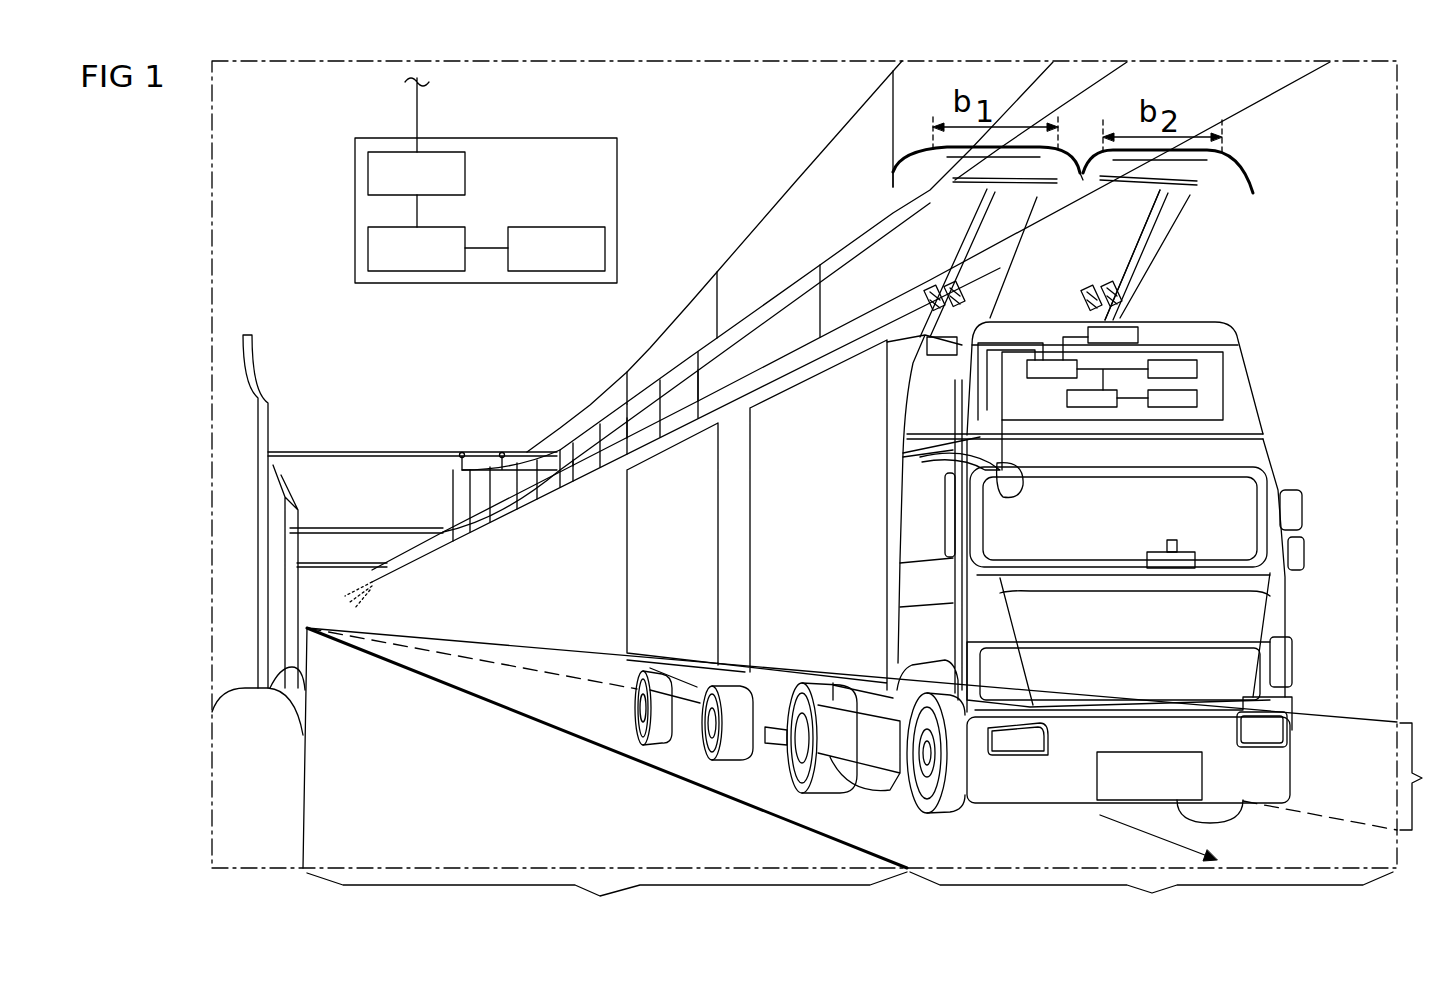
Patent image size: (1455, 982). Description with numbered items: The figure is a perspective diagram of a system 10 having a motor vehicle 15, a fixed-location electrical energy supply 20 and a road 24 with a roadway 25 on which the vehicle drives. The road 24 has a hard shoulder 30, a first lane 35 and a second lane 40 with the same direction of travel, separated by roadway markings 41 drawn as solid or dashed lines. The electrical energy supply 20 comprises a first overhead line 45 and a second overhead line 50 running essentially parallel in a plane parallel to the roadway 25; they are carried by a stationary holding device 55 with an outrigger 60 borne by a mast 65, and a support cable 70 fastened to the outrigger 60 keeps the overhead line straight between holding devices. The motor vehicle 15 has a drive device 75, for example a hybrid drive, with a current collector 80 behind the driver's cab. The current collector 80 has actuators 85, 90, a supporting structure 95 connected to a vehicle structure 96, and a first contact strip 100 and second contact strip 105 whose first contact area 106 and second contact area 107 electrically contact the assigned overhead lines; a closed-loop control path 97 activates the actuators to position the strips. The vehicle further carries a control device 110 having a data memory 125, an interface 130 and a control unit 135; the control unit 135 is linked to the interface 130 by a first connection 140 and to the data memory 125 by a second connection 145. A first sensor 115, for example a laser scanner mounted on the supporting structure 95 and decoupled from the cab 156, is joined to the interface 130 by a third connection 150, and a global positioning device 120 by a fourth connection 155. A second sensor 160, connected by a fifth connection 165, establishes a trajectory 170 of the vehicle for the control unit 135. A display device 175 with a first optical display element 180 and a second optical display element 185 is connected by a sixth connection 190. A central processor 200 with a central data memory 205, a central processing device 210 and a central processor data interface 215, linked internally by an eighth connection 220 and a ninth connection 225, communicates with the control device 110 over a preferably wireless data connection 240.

The system 10 is at (744, 878).
The motor vehicle 15 is at (1340, 516).
The electrical energy supply 20 is at (533, 414).
The road 24 is at (1403, 852).
The roadway 25 is at (1038, 855).
The hard shoulder 30 is at (605, 778).
The first lane 35 is at (852, 778).
The second lane 40 is at (1426, 776).
The roadway markings 41 is at (461, 690).
The first overhead line 45 is at (600, 429).
The second overhead line 50 is at (567, 488).
The holding device 55 is at (295, 444).
The outrigger 60 is at (373, 452).
The mast 65 is at (258, 424).
The support cable 70 is at (797, 178).
The drive device 75 is at (873, 740).
The current collector 80 is at (1212, 258).
The actuator 85 is at (919, 318).
The actuator 90 is at (1103, 280).
The supporting structure 95 is at (1242, 259).
The vehicle structure 96 is at (895, 434).
The closed-loop control path 97 is at (1073, 422).
The first contact strip 100 is at (912, 150).
The second contact strip 105 is at (1238, 167).
The first contact area 106 is at (938, 190).
The second contact area 107 is at (1186, 196).
The control device 110 is at (1225, 402).
The first sensor 115 is at (925, 367).
The global positioning device 120 is at (1135, 330).
The data memory 125 is at (1180, 370).
The interface 130 is at (1045, 378).
The control unit 135 is at (1140, 398).
The first connection 140 is at (1101, 565).
The second connection 145 is at (1150, 343).
The third connection 150 is at (997, 321).
The fourth connection 155 is at (1095, 318).
The cab 156 is at (1280, 657).
The second sensor 160 is at (958, 822).
The fifth connection 165 is at (948, 603).
The trajectory 170 is at (1162, 843).
The display device 175 is at (1310, 554).
The first optical display element 180 is at (1178, 545).
The second optical display element 185 is at (1258, 622).
The sixth connection 190 is at (1177, 568).
The central processor 200 is at (527, 138).
The central data memory 205 is at (565, 271).
The central processing device 210 is at (430, 271).
The central processor data interface 215 is at (368, 175).
The eighth connection 220 is at (417, 212).
The ninth connection 225 is at (492, 248).
The data connection 240 is at (417, 108).